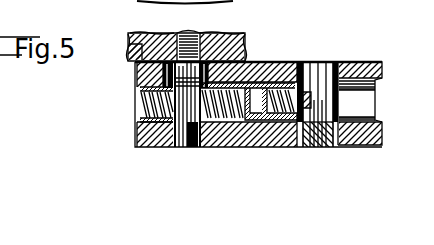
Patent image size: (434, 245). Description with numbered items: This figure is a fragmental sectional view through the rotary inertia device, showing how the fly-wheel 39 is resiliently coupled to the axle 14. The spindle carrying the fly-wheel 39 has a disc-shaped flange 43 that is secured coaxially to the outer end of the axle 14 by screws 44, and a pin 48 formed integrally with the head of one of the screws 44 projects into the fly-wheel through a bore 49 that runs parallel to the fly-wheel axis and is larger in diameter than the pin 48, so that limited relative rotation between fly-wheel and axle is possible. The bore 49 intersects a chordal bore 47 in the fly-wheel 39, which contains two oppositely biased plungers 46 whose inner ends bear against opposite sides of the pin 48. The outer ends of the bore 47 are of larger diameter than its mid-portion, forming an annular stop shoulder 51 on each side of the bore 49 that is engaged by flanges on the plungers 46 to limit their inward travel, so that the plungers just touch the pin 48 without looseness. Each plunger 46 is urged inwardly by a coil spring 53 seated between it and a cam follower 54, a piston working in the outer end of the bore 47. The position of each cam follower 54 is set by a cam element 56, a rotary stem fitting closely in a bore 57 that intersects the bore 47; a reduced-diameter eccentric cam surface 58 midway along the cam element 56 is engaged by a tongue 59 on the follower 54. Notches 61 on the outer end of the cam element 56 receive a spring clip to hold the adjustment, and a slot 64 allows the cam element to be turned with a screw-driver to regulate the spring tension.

The axle 14 is at (246, 34).
The disc-shaped flange 43 is at (129, 52).
The screws 44 is at (183, 33).
The plungers 46 is at (138, 88).
The chordal bore 47 is at (378, 110).
The pin 48 is at (184, 142).
The bore 49 is at (160, 142).
The annular stop shoulder 51 is at (252, 141).
The coil spring 53 is at (139, 103).
The cam follower 54 is at (263, 90).
The cam element 56 is at (339, 62).
The bore 57 is at (375, 88).
The cylindrical cam surface 58 is at (327, 100).
The tongue 59 is at (313, 62).
The notches 61 is at (293, 140).
The slot 64 is at (320, 140).
The fly-wheel 39 is at (382, 67).